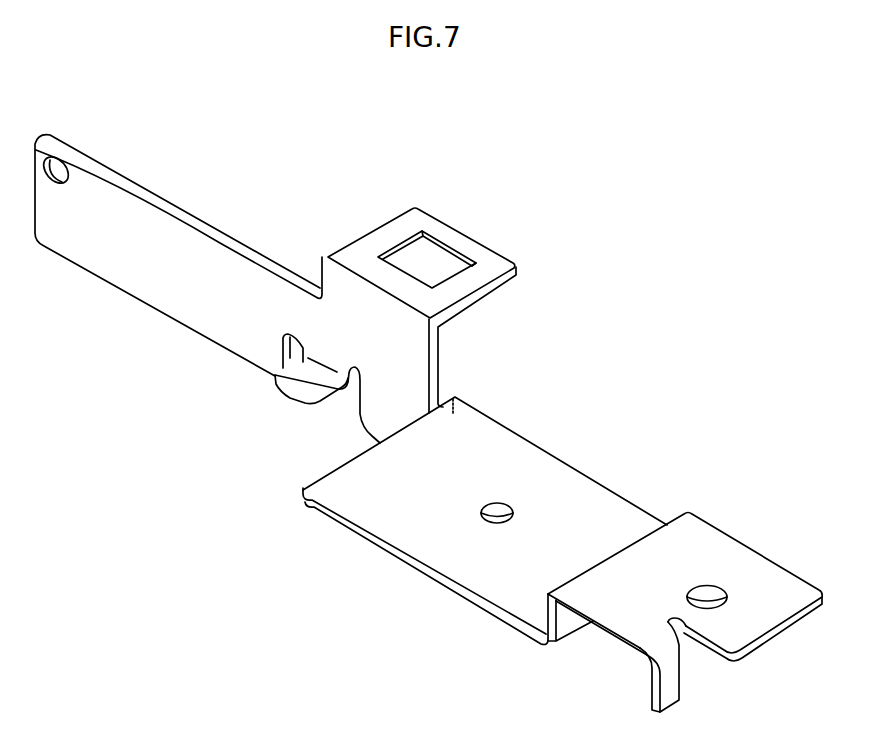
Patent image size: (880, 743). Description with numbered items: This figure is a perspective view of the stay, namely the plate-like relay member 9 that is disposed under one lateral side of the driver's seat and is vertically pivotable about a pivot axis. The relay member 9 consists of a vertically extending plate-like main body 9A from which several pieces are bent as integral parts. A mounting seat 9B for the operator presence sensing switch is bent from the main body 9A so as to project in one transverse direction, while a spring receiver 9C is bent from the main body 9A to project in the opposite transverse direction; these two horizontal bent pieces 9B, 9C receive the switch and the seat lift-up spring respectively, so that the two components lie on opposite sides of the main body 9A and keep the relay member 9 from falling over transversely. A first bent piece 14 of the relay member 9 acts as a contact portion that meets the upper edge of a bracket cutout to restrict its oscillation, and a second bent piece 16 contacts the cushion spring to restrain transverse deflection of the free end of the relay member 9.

The relay member 9 is at (202, 400).
The main body 9A is at (190, 217).
The mounting seat 9B is at (456, 235).
The spring receiver 9C is at (543, 477).
The first bent piece 14 is at (284, 396).
The second bent piece 16 is at (670, 682).